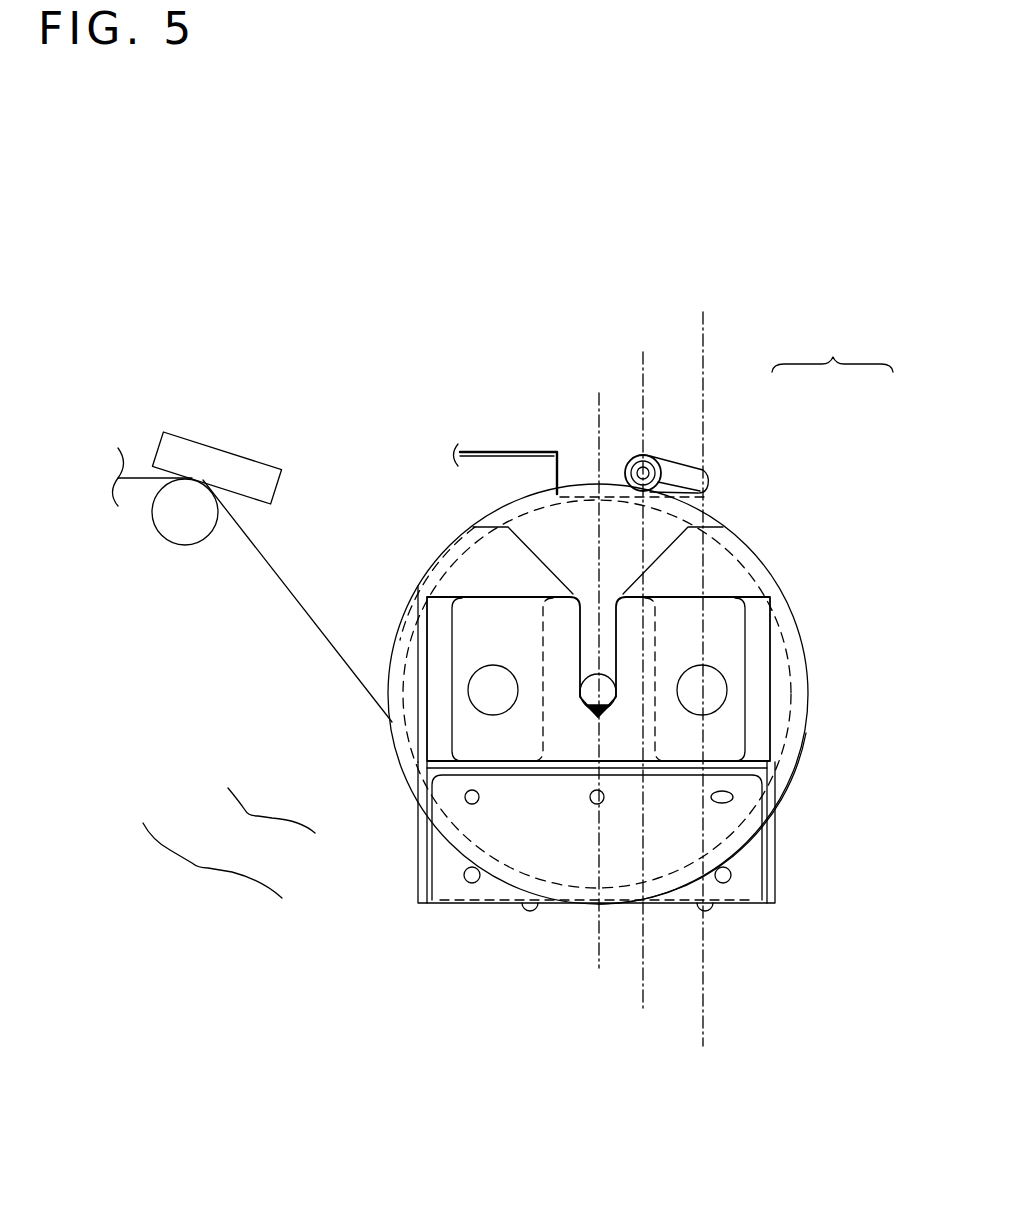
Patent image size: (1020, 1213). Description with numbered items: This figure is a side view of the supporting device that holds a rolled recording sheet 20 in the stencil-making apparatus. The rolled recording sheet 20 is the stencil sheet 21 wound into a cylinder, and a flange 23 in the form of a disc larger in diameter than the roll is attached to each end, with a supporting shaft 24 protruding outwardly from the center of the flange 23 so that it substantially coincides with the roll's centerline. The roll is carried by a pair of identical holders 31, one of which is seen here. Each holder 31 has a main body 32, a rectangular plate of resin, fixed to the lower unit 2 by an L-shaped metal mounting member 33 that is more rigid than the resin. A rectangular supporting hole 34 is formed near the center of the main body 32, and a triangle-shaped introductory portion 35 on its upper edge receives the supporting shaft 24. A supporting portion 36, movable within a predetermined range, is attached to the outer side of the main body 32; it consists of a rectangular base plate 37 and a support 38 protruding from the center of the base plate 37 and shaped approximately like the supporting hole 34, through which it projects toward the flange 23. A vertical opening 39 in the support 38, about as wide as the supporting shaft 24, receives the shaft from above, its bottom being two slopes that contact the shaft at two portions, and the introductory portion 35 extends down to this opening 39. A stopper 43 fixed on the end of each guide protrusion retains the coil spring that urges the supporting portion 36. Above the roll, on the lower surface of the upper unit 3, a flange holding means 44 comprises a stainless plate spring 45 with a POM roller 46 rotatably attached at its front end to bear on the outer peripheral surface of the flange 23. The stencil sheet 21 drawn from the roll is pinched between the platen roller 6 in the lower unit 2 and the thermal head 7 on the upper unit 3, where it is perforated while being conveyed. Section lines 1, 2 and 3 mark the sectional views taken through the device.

The section line I-I 1 is at (599, 393).
The lower unit 2 is at (643, 352).
The upper unit 3 is at (703, 312).
The platen roller 6 is at (195, 546).
The thermal head 7 is at (218, 457).
The rolled recording sheet 20 is at (407, 639).
The stencil sheet 21 is at (303, 610).
The flange 23 is at (800, 628).
The supporting shaft 24 is at (805, 733).
The holder 31 is at (212, 864).
The main body 32 is at (417, 727).
The mounting member 33 is at (437, 863).
The supporting hole 34 is at (657, 640).
The introductory portion 35 is at (527, 545).
The supporting portion 36 is at (264, 825).
The base plate 37 is at (467, 723).
The support 38 is at (563, 715).
The opening 39 is at (617, 632).
The stopper 43 is at (467, 680).
The flange holding means 44 is at (832, 338).
The plate spring 45 is at (558, 464).
The roller 46 is at (707, 472).